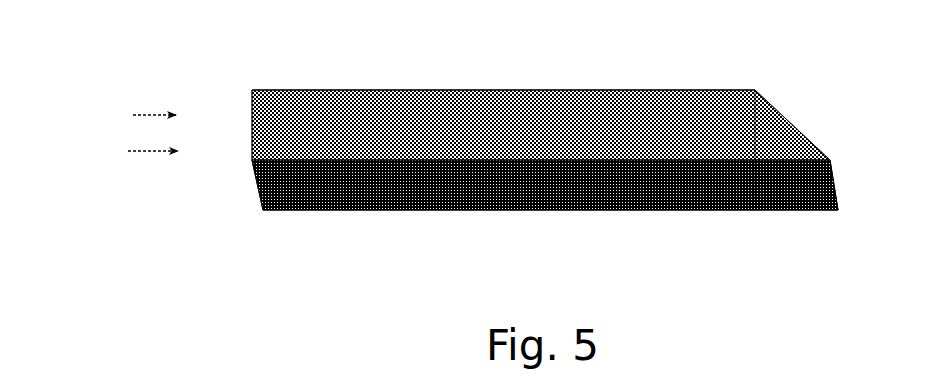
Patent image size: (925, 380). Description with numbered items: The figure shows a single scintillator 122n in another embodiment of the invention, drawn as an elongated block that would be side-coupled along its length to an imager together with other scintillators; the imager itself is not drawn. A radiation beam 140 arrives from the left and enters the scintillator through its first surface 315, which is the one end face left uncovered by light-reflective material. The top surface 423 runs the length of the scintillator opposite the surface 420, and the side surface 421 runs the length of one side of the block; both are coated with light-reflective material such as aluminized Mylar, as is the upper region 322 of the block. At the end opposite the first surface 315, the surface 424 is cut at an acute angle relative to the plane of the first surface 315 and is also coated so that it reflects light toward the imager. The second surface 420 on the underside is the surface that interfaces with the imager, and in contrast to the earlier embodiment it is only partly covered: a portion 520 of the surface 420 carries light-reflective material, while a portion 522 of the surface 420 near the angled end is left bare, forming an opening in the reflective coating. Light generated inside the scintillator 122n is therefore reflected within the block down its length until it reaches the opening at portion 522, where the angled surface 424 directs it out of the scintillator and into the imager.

The scintillator 122n is at (545, 111).
The radiation beam 140 is at (109, 131).
The first surface 315 is at (249, 120).
The first portion of scintillator 322 is at (503, 64).
The surface 423 is at (547, 85).
The surface 424 is at (793, 124).
The second surface 420 is at (300, 201).
The surface 421 is at (573, 173).
The portion 520 is at (470, 201).
The portion 522 is at (794, 186).